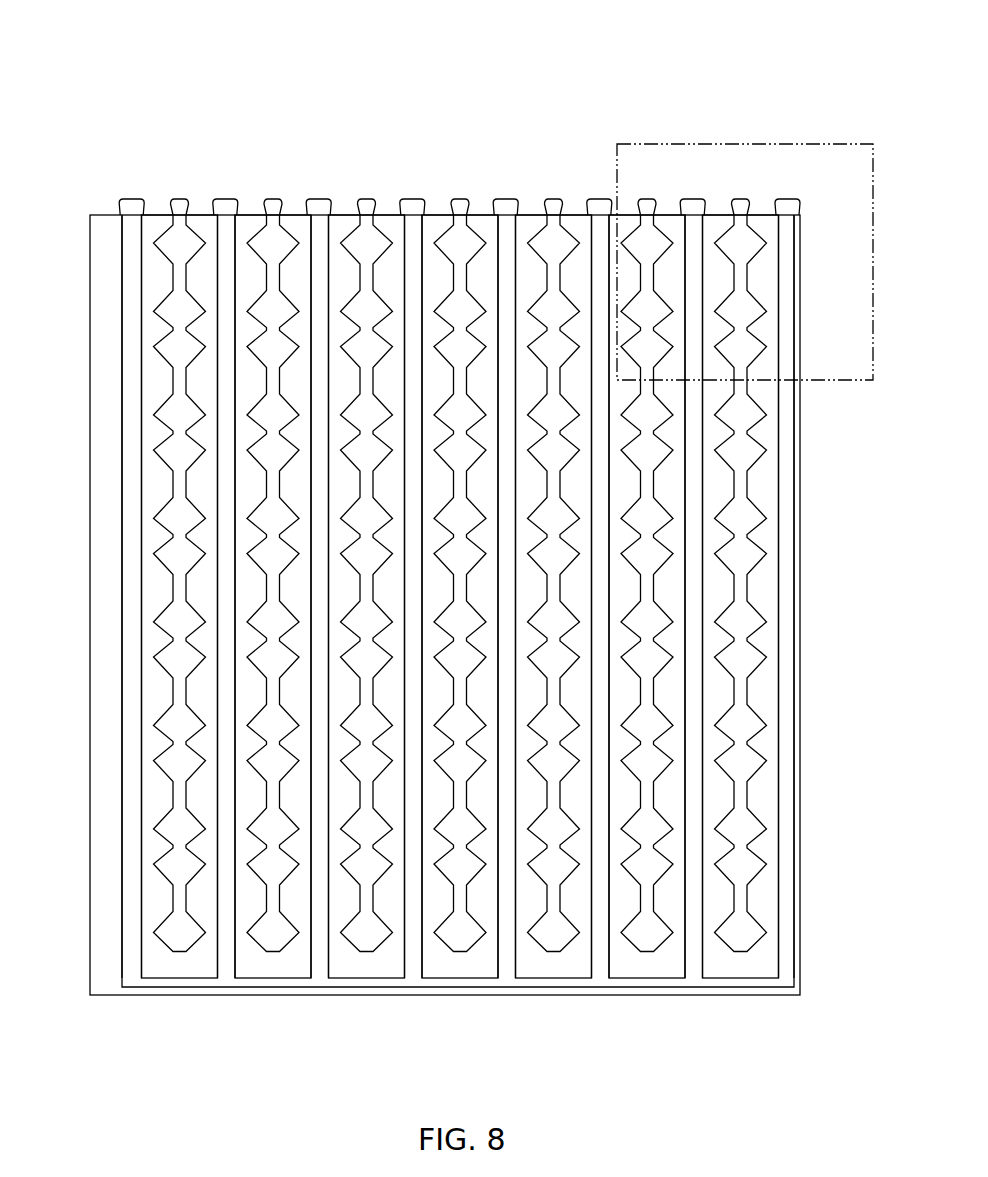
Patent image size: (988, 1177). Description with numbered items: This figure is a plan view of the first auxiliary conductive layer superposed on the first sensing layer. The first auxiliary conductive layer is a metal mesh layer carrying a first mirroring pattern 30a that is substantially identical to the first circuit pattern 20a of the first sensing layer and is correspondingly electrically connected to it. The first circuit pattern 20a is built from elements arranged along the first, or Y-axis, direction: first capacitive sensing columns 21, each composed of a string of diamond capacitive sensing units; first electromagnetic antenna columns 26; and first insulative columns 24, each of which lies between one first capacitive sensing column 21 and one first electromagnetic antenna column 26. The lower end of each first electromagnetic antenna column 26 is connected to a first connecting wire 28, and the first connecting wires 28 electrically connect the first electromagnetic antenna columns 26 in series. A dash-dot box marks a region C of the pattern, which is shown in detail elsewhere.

The first mirroring pattern 30a is at (96, 217).
The first circuit pattern 20a is at (280, 185).
The first capacitive sensing column 21 is at (460, 208).
The first insulative column 24 is at (438, 222).
The first electromagnetic antenna column 26 is at (510, 207).
The first connecting wire 28 is at (762, 985).
The enlarged region C is at (817, 382).